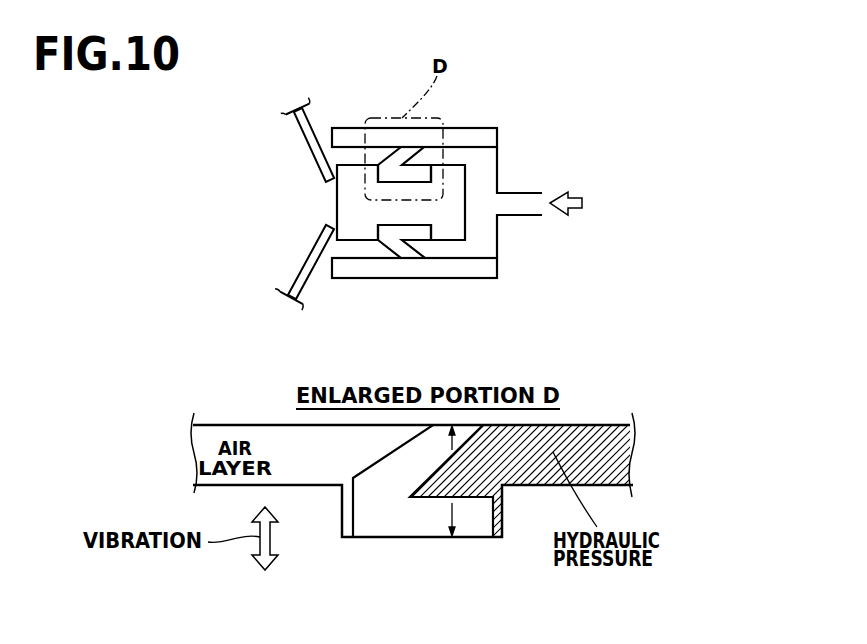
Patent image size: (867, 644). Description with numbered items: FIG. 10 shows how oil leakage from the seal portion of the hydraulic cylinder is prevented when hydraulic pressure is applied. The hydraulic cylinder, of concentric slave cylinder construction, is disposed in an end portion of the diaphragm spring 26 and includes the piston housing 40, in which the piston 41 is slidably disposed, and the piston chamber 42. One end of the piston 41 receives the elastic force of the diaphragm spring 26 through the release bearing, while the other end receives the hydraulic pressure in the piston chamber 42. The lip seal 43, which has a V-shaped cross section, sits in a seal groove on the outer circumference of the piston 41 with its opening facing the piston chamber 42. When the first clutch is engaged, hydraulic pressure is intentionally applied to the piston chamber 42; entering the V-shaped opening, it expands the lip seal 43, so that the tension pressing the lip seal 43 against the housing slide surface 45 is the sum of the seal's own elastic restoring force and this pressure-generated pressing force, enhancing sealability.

The diaphragm spring 26 is at (316, 116).
The piston housing 40 is at (461, 286).
The piston 41 is at (357, 249).
The piston chamber 42 is at (490, 207).
The lip seal 43 is at (429, 248).
The housing slide surface 45 is at (266, 429).